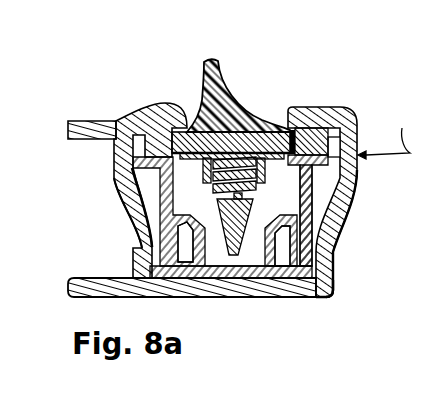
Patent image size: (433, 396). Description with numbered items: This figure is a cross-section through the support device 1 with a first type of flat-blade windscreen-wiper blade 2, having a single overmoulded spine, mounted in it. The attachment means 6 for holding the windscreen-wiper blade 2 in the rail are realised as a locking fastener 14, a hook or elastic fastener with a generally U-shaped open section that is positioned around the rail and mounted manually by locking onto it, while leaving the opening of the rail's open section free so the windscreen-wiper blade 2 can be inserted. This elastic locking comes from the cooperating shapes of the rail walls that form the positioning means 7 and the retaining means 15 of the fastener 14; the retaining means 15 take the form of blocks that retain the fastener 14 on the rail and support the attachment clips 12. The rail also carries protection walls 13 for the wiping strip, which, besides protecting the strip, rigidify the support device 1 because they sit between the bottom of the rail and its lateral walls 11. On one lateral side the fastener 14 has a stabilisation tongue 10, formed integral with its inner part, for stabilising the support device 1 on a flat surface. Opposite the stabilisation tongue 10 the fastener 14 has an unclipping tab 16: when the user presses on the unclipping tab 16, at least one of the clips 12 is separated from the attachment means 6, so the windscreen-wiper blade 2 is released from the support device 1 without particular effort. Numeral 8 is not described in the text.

The support device 1 is at (331, 202).
The windscreen-wiper blade 2 is at (216, 70).
The attachment means 6 is at (384, 134).
The positioning means 7 is at (152, 152).
The plate 8 is at (253, 137).
The stabilisation tongue 10 is at (72, 283).
The lateral walls 11 is at (305, 247).
The attachment clips 12 is at (180, 110).
The protection walls 13 is at (216, 257).
The locking fastener 14 is at (316, 285).
The retaining means 15 is at (310, 135).
The unclipping tab 16 is at (88, 132).